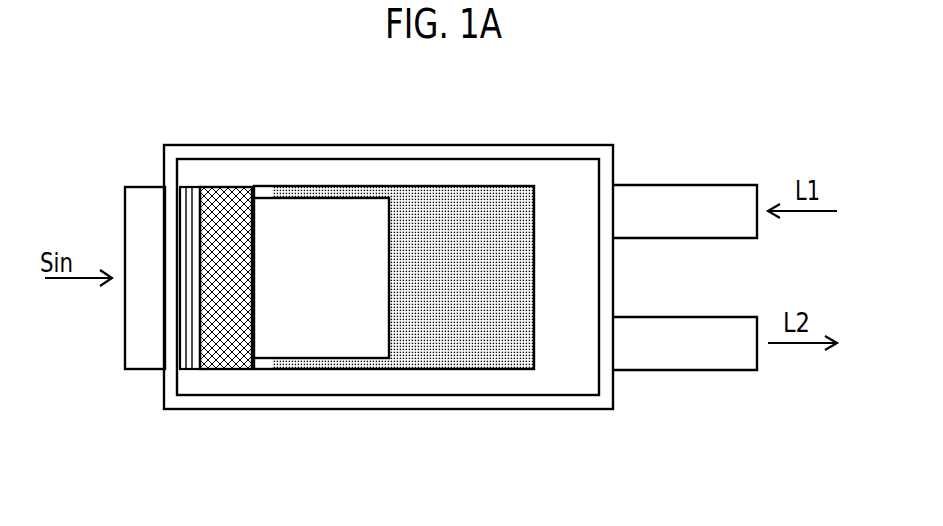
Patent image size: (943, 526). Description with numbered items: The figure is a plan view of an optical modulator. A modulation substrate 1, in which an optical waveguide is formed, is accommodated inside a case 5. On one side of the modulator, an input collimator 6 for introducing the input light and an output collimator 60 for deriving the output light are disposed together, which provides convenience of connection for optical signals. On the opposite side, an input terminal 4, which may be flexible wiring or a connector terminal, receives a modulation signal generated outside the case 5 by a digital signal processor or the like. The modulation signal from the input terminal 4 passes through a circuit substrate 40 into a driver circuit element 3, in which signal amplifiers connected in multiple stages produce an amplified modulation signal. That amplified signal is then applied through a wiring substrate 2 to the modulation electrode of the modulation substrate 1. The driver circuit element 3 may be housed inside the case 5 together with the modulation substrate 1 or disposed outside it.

The modulation substrate 1 is at (445, 197).
The wiring substrate 2 is at (262, 193).
The driver circuit element 3 is at (225, 185).
The input terminal 4 is at (143, 358).
The circuit substrate 40 is at (193, 363).
The case 5 is at (512, 411).
The input collimator 6 is at (668, 198).
The output collimator 60 is at (675, 350).